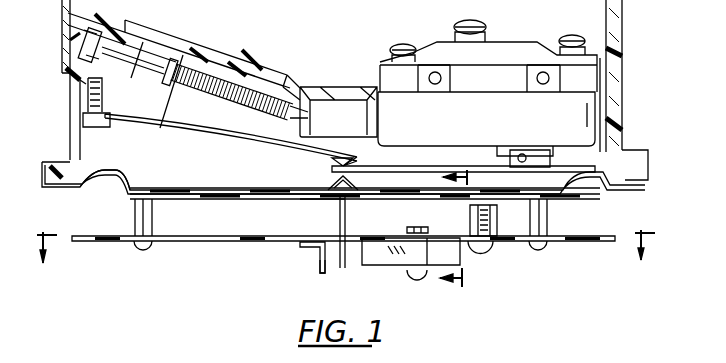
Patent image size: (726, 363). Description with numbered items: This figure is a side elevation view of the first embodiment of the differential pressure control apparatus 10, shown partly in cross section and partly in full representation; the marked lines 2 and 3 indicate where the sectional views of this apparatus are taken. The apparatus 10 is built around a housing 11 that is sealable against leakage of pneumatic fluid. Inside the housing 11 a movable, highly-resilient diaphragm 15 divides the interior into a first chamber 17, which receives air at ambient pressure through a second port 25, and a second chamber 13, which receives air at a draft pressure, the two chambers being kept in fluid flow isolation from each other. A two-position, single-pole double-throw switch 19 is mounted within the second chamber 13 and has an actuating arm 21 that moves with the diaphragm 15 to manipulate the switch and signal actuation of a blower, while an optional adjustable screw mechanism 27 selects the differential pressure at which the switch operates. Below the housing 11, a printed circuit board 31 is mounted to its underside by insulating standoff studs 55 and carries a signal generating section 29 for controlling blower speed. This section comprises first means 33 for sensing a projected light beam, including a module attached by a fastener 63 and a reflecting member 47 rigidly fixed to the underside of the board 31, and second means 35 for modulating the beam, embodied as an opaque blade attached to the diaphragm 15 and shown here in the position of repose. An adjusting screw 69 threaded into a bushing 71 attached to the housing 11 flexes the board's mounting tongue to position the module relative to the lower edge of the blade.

The control apparatus 10 is at (40, 24).
The housing 11 is at (632, 85).
The second chamber 13 is at (205, 169).
The diaphragm 15 is at (113, 177).
The first chamber 17 is at (93, 192).
The switch 19 is at (468, 120).
The actuating arm 21 is at (398, 165).
The second port 25 is at (320, 202).
The adjustable screw mechanism 27 is at (180, 95).
The signal generating section 29 is at (310, 267).
The printed circuit board 31 is at (113, 242).
The first means 33 is at (387, 270).
The second means 35 is at (340, 277).
The reflecting member 47 is at (322, 252).
The insulating standoff studs 55 is at (135, 218).
The fastener 63 is at (410, 230).
The adjusting screw 69 is at (493, 241).
The bushing 71 is at (468, 215).
The section line 2- 2 is at (445, 236).
The section line 3- 3 is at (342, 248).